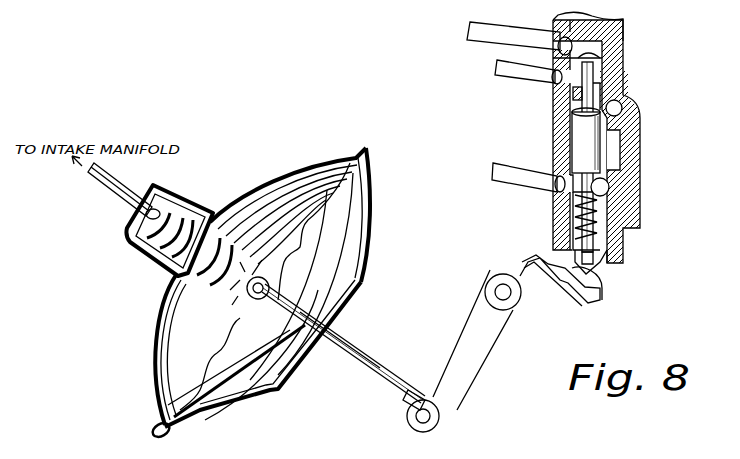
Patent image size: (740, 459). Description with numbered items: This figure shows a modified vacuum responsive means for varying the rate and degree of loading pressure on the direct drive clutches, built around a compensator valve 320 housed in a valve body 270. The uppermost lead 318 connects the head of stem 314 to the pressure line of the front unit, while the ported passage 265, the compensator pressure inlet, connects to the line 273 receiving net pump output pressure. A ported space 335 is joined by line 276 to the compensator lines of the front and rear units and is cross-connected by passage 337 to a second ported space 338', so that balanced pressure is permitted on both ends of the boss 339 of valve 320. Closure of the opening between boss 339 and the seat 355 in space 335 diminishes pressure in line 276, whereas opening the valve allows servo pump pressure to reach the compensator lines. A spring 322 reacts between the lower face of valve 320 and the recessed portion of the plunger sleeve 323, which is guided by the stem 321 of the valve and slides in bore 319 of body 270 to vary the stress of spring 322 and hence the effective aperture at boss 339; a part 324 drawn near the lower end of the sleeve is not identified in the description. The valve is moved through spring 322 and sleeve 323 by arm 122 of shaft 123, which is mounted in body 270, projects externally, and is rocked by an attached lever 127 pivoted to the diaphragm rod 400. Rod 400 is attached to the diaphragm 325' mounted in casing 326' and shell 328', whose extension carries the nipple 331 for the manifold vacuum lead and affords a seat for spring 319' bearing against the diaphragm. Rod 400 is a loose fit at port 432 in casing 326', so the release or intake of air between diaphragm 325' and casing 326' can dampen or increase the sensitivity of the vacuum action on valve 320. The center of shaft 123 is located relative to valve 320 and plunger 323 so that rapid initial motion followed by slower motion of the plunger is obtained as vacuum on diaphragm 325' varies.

The uppermost lead 318 is at (470, 31).
The line 273 is at (497, 70).
The ported passage 265 is at (548, 84).
The compensator valve 320 is at (574, 132).
The boss 339 is at (560, 157).
The line 276 is at (513, 180).
The valve body 270 is at (566, 205).
The stem 321 is at (580, 248).
The bore 319 is at (615, 38).
The stem 314 is at (628, 74).
The seat 355 is at (632, 100).
The ported space 335 is at (640, 118).
The passage 337 is at (620, 160).
The spring 322 is at (609, 184).
The ported space 338' is at (631, 217).
The plunger sleeve 323 is at (596, 250).
The foot 324 is at (598, 286).
The arm 122 is at (553, 300).
The shaft 123 is at (505, 297).
The lever 127 is at (455, 390).
The diaphragm rod 400 is at (365, 377).
The port 432 is at (330, 300).
The shell 328' is at (288, 202).
The diaphragm 325' is at (338, 211).
The casing 326' is at (290, 301).
The nipple 331 is at (97, 185).
The spring 319' is at (156, 231).